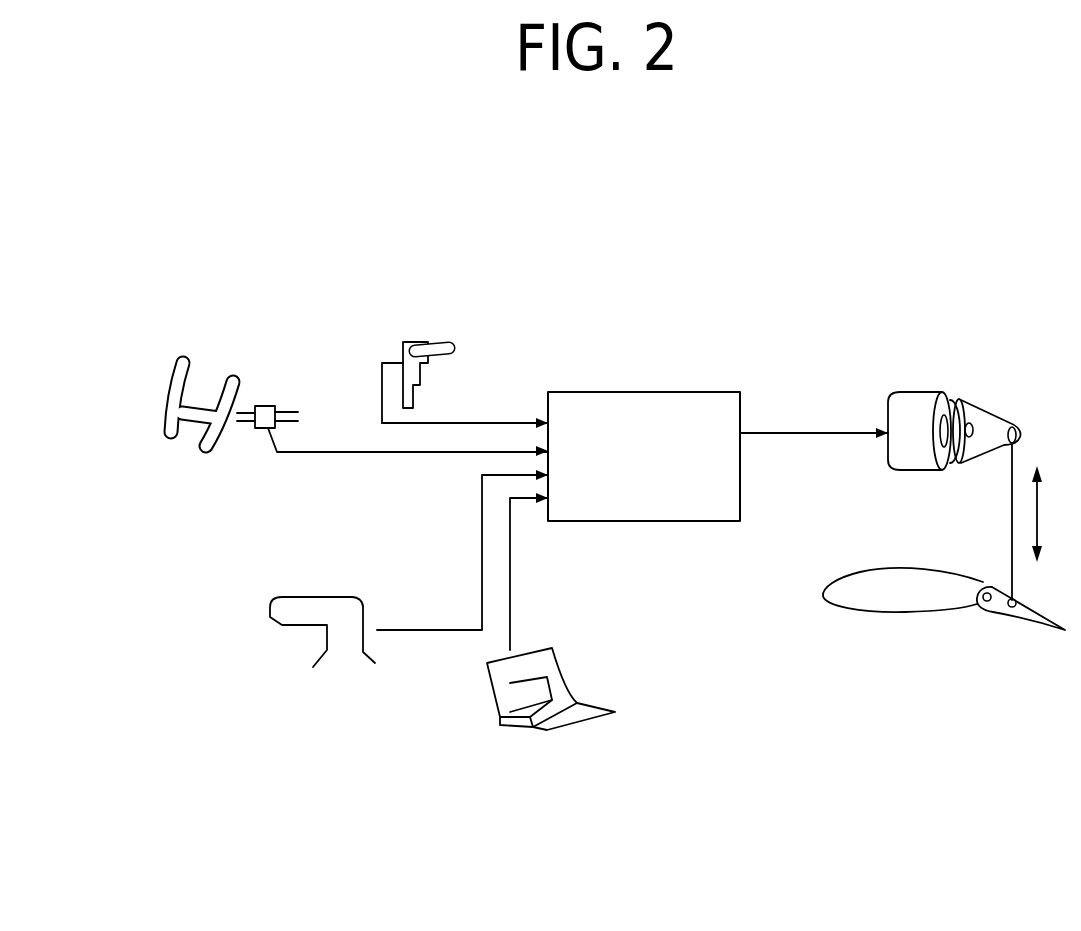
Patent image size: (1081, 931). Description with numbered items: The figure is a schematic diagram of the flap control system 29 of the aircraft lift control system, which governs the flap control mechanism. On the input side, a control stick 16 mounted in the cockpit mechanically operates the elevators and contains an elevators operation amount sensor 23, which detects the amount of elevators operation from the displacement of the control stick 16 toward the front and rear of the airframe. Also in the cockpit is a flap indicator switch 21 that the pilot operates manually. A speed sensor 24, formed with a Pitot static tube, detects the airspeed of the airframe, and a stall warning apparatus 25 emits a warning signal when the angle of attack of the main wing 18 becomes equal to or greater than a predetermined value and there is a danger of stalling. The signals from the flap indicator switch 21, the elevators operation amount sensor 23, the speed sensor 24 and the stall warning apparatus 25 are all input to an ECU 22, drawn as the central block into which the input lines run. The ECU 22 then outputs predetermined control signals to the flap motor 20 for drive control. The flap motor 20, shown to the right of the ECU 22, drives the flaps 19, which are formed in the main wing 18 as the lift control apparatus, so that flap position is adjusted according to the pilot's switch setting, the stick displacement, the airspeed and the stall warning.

The flap control system 29 is at (355, 246).
The control stick 16 is at (174, 378).
The elevators operation amount sensor 23 is at (267, 406).
The flap indicator switch 21 is at (442, 331).
The ECU 22 is at (667, 392).
The flap motor 20 is at (922, 392).
The main wing 18 is at (912, 612).
The flaps 19 is at (1027, 623).
The speed sensor 24 is at (282, 625).
The stall warning apparatus 25 is at (580, 725).